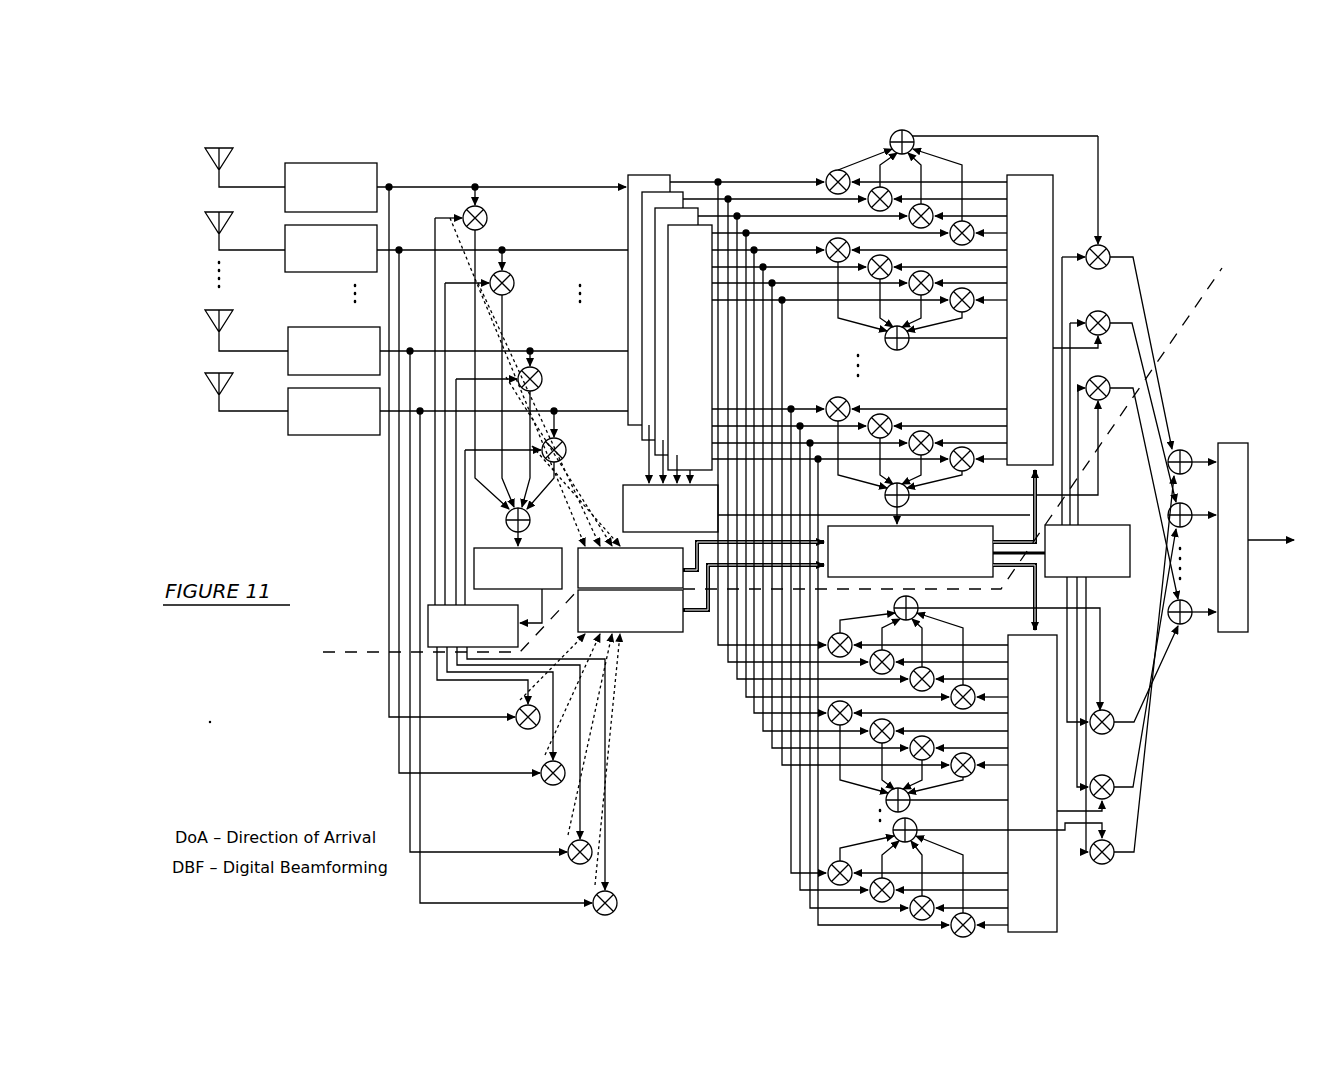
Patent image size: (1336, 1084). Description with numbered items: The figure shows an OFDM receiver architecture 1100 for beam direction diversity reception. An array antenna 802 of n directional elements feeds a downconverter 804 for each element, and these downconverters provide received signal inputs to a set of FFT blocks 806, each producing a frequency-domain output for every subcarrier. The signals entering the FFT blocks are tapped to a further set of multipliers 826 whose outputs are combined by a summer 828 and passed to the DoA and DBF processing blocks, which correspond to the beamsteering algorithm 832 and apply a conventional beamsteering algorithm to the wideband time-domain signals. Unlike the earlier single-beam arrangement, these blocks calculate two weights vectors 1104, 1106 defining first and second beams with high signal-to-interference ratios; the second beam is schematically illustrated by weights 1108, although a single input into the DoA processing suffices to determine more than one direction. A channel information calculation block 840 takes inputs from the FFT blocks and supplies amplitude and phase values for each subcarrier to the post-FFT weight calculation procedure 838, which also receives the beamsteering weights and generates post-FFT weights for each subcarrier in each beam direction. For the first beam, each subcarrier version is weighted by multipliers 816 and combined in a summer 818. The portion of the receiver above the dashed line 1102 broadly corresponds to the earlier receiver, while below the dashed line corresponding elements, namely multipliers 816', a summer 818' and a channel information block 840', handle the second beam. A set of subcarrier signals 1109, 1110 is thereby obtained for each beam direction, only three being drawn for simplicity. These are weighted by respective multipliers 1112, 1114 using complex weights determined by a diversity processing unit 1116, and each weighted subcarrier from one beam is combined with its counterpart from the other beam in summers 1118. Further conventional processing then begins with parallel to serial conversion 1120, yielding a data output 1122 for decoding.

The array antenna 802 is at (231, 134).
The downconverter 804 is at (334, 162).
The fast fourier transform (FFT) block 806 is at (658, 174).
The multipliers 816 is at (900, 170).
The summer 818 is at (968, 152).
The multipliers 826 is at (486, 207).
The summer 828 is at (531, 526).
The beamsteering algorithm 832 is at (474, 571).
The post-FFT weight calculation procedure 838 is at (868, 525).
The channel information calculation block 840 is at (832, 339).
The channel information calculation block 840' is at (1056, 783).
The multipliers 816' is at (900, 654).
The summer 818' is at (970, 653).
The receiver architecture 1100 is at (208, 724).
The dashed line 1102 is at (1228, 257).
The weights vector 1104 is at (661, 548).
The second weights vector 1106 is at (674, 652).
The weights 1108 is at (628, 922).
The subcarrier signals 1109 is at (1096, 370).
The subcarrier signals 1110 is at (1105, 840).
The multipliers 1112 is at (1095, 352).
The multipliers 1114 is at (1110, 840).
The diversity processing unit 1116 is at (1106, 525).
The summers 1118 is at (1196, 600).
The parallel to serial conversion 1120 is at (1240, 632).
The data output 1122 is at (1260, 535).